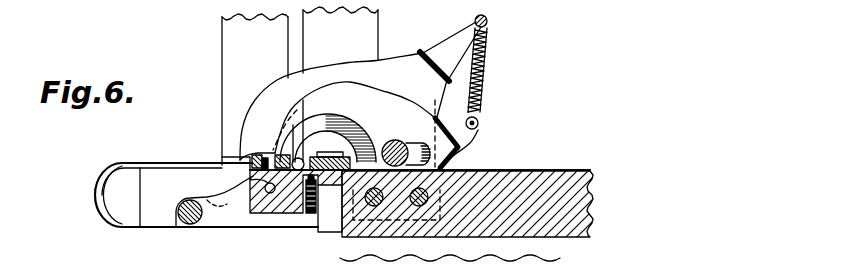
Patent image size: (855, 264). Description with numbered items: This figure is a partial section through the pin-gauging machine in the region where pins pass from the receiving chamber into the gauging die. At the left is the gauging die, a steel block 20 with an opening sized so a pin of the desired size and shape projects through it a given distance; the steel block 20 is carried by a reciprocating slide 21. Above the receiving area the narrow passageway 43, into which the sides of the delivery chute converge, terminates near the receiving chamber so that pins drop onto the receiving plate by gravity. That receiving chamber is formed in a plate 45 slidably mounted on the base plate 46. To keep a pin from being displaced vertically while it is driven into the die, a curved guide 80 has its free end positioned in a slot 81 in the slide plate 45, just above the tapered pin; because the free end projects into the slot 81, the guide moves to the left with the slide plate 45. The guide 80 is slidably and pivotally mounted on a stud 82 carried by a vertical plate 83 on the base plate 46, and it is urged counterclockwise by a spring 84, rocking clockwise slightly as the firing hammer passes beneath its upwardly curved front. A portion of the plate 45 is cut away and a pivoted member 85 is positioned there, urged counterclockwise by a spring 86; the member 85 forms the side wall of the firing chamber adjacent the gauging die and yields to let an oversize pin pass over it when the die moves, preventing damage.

The steel block 20 is at (250, 180).
The reciprocating slide 21 is at (122, 217).
The narrow passageway 43 is at (288, 56).
The plate 45 is at (337, 156).
The base plate 46 is at (527, 183).
The curved guide 80 is at (391, 101).
The slot 81 is at (218, 205).
The stud 82 is at (403, 136).
The vertical plate 83 is at (446, 46).
The spring 84 is at (487, 68).
The pivoted member 85 is at (217, 217).
The spring 86 is at (317, 198).